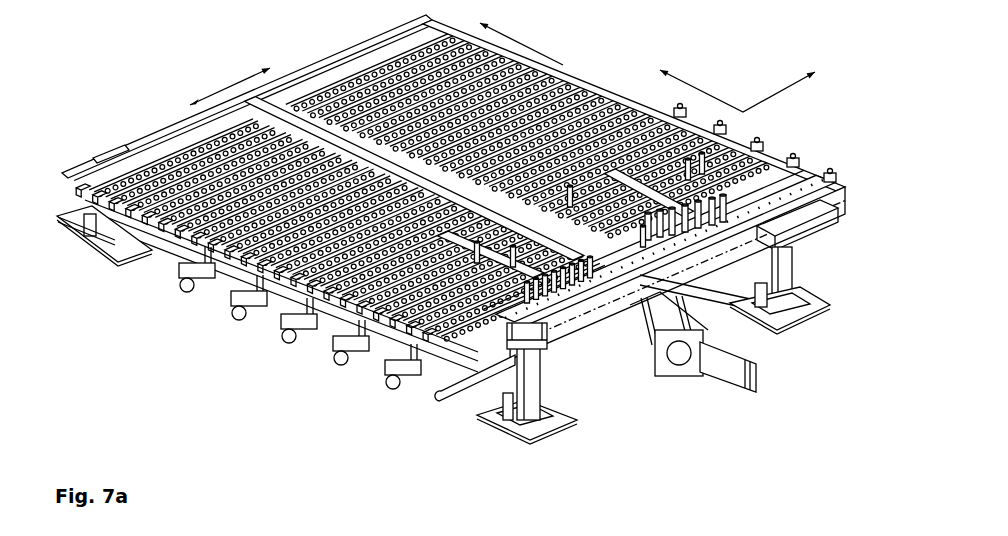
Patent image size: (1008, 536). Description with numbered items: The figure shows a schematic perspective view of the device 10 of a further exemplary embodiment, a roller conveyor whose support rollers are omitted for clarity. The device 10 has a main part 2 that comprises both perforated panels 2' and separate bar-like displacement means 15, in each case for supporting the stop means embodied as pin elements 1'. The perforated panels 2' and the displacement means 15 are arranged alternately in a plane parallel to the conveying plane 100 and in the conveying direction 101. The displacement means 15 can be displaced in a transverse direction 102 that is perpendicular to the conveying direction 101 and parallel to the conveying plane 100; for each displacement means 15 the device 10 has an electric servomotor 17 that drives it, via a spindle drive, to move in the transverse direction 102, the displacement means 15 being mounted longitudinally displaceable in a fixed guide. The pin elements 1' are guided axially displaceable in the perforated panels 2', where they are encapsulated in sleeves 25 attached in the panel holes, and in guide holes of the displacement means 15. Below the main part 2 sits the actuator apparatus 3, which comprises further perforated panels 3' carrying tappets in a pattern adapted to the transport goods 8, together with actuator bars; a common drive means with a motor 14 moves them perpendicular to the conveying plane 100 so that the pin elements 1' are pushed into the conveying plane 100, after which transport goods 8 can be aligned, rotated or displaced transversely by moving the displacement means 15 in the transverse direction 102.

The device 10 is at (108, 106).
The transverse direction 102 is at (230, 87).
The conveying direction 101 is at (527, 46).
The conveying plane 100 is at (737, 91).
The transport goods 8 is at (631, 170).
The electric servomotor 17 is at (832, 176).
The displacement means 15 is at (325, 342).
The actuator apparatus 3 is at (440, 395).
The further perforated panels 3' is at (440, 395).
The perforated panel 2' is at (518, 402).
The pin elements 1' is at (601, 305).
The sleeves 25 is at (601, 305).
The main part 2 is at (677, 277).
The motor 14 is at (716, 367).